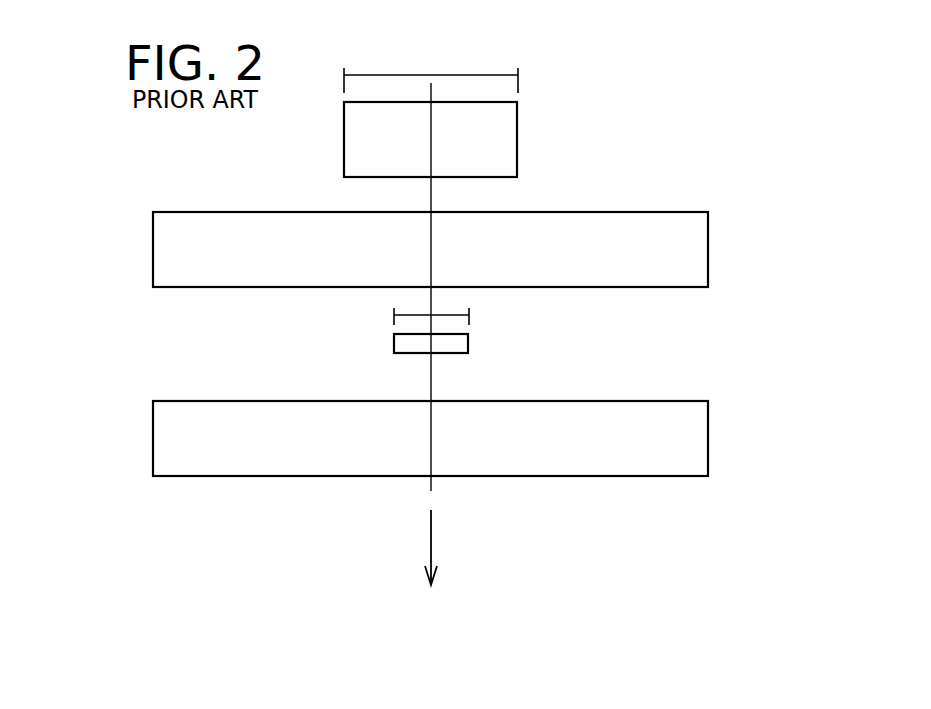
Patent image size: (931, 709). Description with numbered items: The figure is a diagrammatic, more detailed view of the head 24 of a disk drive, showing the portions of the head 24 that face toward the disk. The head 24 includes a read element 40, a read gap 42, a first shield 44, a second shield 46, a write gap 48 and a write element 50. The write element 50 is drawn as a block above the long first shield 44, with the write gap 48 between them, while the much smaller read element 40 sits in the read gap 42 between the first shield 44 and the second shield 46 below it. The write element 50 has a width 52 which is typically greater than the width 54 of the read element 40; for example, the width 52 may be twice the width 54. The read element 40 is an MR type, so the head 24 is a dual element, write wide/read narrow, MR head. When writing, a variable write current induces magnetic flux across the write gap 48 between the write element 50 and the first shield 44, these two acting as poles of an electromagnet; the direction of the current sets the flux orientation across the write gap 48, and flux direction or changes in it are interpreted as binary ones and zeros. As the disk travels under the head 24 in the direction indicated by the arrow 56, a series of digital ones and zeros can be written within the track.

The head 24 is at (744, 475).
The read element 40 is at (469, 342).
The read gap 42 is at (140, 333).
The first shield 44 is at (703, 237).
The second shield 46 is at (703, 425).
The write gap 48 is at (352, 194).
The write element 50 is at (512, 130).
The width of the write element 52 is at (458, 75).
The width of the read element 54 is at (442, 315).
The arrow 56 is at (431, 538).